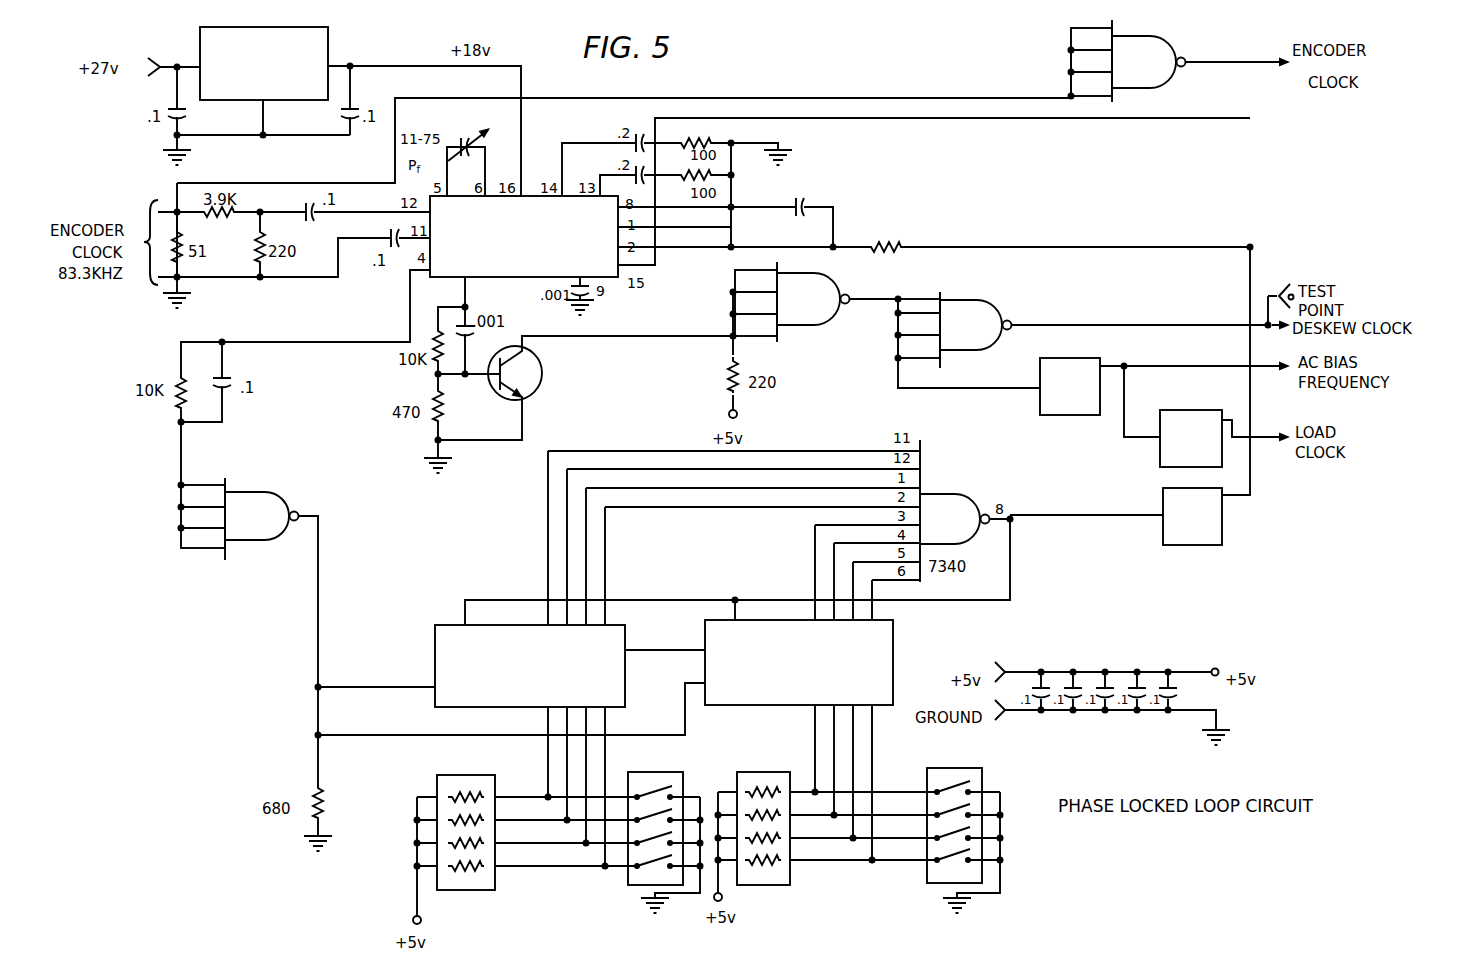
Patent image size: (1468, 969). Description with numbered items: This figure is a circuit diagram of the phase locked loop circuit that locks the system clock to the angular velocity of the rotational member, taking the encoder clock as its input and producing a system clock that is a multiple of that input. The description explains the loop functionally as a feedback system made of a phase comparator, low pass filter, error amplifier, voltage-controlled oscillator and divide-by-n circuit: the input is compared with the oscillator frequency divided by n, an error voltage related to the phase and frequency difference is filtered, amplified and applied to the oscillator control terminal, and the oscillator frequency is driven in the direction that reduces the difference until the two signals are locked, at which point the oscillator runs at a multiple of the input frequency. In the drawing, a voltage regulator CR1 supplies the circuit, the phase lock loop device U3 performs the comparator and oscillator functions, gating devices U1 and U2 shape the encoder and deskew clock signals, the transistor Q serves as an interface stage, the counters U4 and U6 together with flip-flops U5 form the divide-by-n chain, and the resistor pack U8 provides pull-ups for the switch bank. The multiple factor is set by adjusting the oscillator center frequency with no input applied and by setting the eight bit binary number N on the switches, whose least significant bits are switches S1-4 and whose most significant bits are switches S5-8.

The voltage regulator LM342-18 CR1 is at (264, 63).
The NAND gate 74S140 U1 is at (1094, 197).
The NAND gate 7413 U2 is at (539, 519).
The phase lock loop NE526B U3 is at (524, 236).
The counter 74161 U4 is at (556, 669).
The flip-flop 74H76 U5 is at (1137, 457).
The counter 74161 / 1K resistor pack U6 is at (661, 750).
The 1K resistor pack U8 is at (760, 819).
The transistor 2N3904 Q is at (585, 388).
The switches S1 through S4 (lower bits of N) S1-4 is at (655, 819).
The switches S5 through S8 (upper bits of N) S5-8 is at (954, 818).